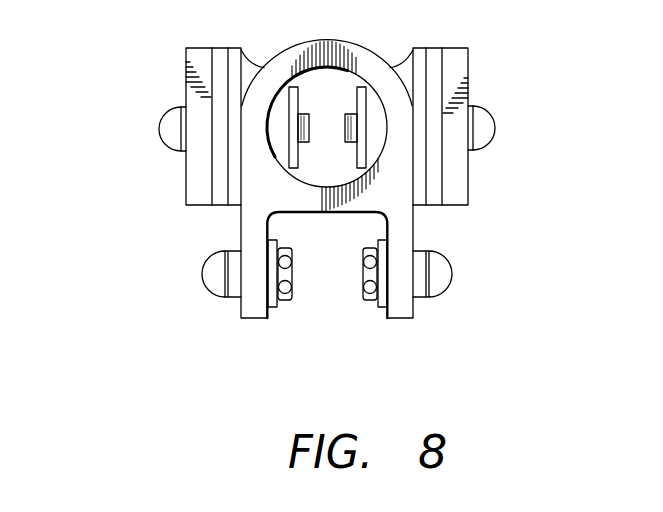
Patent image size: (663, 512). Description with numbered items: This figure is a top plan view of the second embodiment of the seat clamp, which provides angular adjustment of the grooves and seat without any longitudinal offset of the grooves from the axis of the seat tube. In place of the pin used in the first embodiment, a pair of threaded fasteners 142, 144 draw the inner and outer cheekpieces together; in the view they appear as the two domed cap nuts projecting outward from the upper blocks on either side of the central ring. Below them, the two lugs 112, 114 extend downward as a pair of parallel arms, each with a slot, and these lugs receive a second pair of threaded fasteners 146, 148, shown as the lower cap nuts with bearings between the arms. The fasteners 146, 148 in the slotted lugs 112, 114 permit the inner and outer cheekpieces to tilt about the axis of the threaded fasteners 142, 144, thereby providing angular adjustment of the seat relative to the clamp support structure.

The lug 112 is at (257, 318).
The lug 114 is at (405, 318).
The threaded fastener 142 is at (158, 128).
The threaded fastener 144 is at (490, 108).
The threaded fastener 146 is at (198, 273).
The threaded fastener 148 is at (453, 273).